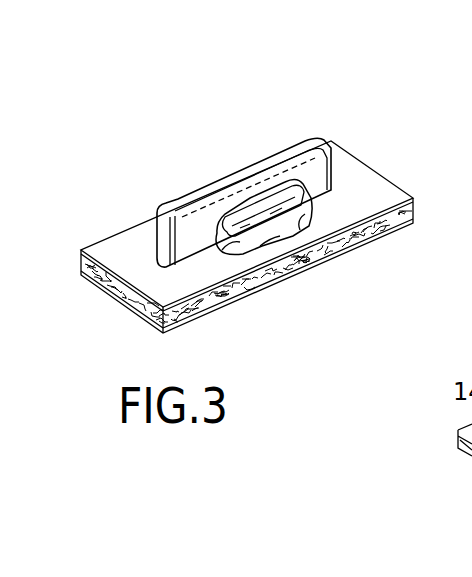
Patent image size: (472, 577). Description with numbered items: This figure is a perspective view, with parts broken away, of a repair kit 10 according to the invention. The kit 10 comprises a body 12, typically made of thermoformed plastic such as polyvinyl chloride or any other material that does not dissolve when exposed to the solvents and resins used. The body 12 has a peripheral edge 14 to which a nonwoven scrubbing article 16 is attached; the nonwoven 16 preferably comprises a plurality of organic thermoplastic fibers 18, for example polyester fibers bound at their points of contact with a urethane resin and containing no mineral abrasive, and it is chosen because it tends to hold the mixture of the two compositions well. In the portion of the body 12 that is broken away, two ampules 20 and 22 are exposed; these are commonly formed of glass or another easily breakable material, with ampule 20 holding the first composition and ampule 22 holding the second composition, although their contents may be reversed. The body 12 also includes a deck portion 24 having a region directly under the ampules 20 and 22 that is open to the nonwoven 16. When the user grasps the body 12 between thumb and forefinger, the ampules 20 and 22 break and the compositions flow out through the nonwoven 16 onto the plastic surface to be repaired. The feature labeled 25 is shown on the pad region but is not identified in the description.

The kit 10 is at (384, 76).
The body 12 is at (172, 203).
The peripheral edge 14 is at (110, 252).
The nonwoven scrubbing article 16 is at (133, 309).
The organic thermoplastic fibers 18 is at (270, 277).
The ampule 20 is at (296, 185).
The ampule 22 is at (312, 190).
The deck portion 24 is at (385, 190).
The rolled edge of pad 25 is at (295, 230).